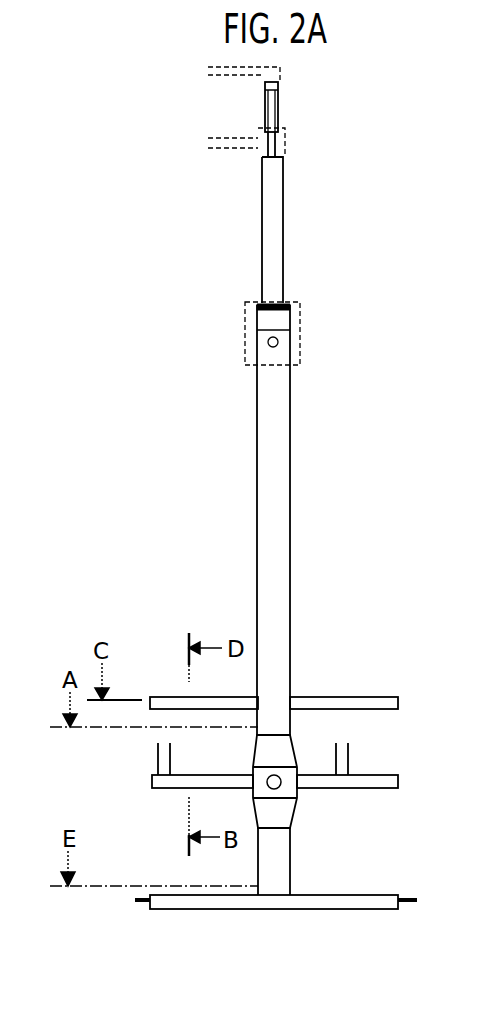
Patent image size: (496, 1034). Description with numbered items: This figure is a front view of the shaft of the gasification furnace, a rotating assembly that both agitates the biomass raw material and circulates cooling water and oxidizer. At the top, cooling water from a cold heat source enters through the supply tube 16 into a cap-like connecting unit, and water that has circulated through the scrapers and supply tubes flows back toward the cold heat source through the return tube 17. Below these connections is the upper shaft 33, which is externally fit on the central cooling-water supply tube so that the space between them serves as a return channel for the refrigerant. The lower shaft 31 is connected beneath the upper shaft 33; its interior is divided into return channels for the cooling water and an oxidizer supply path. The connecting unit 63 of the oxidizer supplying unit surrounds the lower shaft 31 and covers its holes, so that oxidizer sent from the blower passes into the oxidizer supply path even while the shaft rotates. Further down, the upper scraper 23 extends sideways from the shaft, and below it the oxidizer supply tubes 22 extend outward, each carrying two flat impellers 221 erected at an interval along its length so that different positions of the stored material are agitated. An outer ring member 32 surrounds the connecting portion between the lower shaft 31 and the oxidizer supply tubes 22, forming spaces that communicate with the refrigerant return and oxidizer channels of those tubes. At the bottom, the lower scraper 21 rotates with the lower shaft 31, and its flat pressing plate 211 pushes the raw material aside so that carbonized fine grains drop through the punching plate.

The supply tube 16 is at (262, 75).
The return tube 17 is at (258, 147).
The upper shaft 33 is at (281, 253).
The connecting unit 63 is at (245, 330).
The lower shaft 31 is at (290, 540).
The outer ring member 32 is at (255, 764).
The upper scraper 23 is at (182, 698).
The impeller 221 is at (160, 766).
The oxidizer supply tube 22 is at (385, 780).
The lower scraper 21 is at (173, 897).
The pressing plate 211 is at (385, 906).